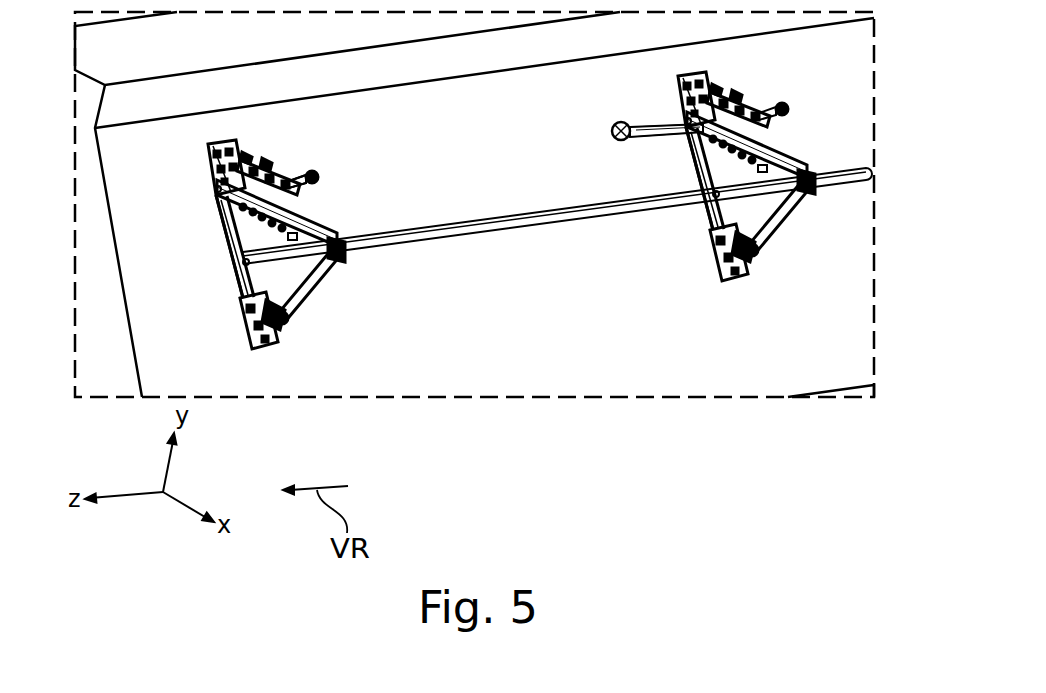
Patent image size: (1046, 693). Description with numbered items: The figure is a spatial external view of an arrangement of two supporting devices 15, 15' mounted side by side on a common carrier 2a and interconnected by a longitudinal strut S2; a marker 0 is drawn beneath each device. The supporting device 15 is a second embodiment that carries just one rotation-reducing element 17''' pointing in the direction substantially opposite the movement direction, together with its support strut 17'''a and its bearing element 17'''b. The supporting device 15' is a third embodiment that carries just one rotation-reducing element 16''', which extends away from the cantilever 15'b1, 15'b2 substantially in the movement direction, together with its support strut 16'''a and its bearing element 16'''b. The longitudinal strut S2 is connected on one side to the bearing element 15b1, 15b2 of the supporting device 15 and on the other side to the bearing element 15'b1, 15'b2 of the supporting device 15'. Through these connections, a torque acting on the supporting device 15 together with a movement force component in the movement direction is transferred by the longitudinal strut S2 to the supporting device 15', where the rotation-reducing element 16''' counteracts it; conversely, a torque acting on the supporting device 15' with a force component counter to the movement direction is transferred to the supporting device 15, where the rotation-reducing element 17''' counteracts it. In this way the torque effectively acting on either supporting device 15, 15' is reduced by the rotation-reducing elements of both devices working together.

The beam / rail 2a is at (512, 178).
The longitudinal strut S2 is at (548, 218).
The supporting device 15 is at (302, 261).
The bearing element 15b1 is at (218, 202).
The bearing element 15b2 is at (300, 207).
The supporting device 15' is at (754, 202).
The cantilever 15'b1 is at (770, 162).
The cantilever 15'b2 is at (816, 145).
The rotation-reducing element 17''' is at (353, 205).
The support strut 17'''a is at (327, 152).
The bearing element 17'''b is at (375, 169).
The rotation-reducing element 16''' is at (666, 197).
The support strut 16'''a is at (656, 99).
The bearing element 16'''b is at (574, 124).
The origin marker 0 is at (491, 332).